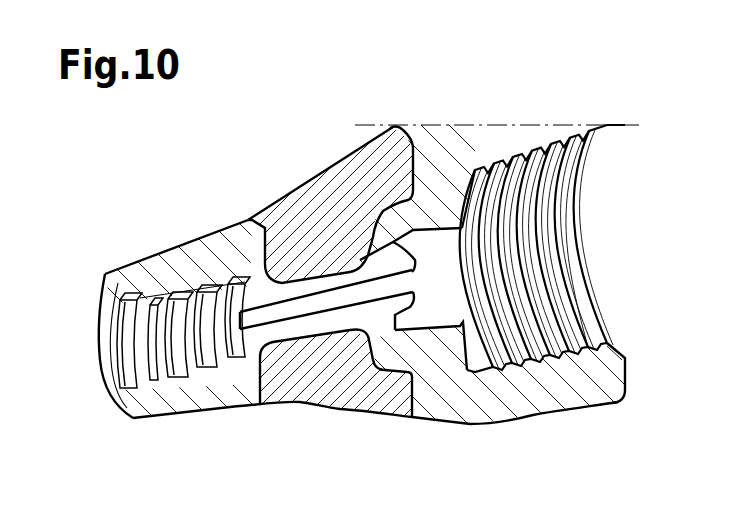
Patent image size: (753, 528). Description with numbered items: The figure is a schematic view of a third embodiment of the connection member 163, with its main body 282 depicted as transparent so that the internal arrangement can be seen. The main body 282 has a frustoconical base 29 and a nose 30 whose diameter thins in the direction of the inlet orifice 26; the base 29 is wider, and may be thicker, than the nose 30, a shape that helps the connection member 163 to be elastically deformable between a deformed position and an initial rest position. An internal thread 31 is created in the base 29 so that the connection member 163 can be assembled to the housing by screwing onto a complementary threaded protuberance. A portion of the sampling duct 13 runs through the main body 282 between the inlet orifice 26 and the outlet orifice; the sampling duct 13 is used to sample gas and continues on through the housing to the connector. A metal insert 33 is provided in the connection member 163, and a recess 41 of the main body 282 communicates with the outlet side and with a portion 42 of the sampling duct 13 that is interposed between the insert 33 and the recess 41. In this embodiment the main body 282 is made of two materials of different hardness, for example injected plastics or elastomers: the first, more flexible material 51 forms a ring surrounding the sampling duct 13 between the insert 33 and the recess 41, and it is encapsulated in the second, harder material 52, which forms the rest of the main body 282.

The connection member 163 is at (315, 106).
The nose 30 is at (178, 222).
The inlet orifice 26 is at (100, 370).
The second material 52 is at (168, 280).
The first material 51 is at (306, 220).
The portion of the sampling duct 42 is at (307, 305).
The sampling duct 13 is at (252, 345).
The recess 41 is at (422, 248).
The main body 282 is at (442, 382).
The internal thread 31 is at (532, 203).
The frustoconical base 29 is at (529, 402).
The metal insert 33 is at (190, 388).